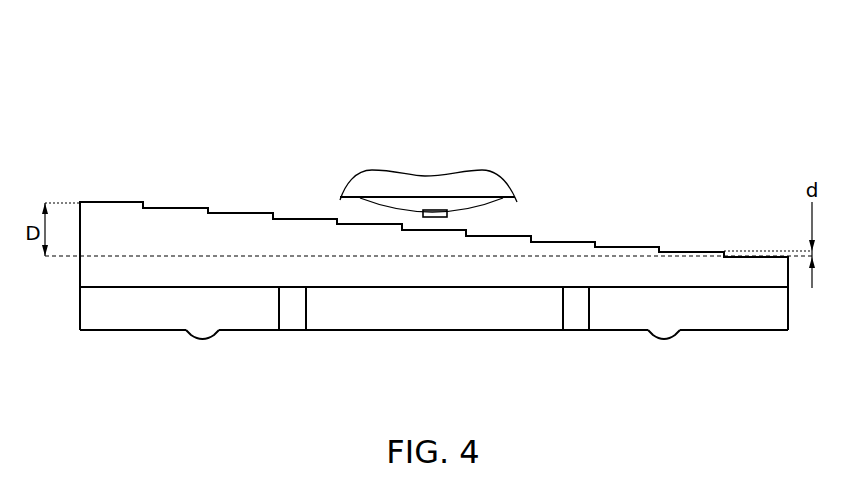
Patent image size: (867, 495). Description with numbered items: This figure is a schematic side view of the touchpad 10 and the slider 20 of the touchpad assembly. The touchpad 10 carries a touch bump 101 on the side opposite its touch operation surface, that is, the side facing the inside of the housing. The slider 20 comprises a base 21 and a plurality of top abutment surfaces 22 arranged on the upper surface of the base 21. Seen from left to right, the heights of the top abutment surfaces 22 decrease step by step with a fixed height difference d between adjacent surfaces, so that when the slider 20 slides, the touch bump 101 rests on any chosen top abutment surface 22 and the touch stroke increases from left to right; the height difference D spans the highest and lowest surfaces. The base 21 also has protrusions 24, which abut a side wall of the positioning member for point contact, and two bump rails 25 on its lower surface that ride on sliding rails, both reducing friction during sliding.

The touchpad 10 is at (372, 183).
The touch bump 101 is at (438, 212).
The slider 20 is at (711, 100).
The base 21 is at (101, 307).
The top abutment surfaces 22 is at (115, 202).
The protrusion 24 is at (291, 318).
The bump rails 25 is at (201, 340).